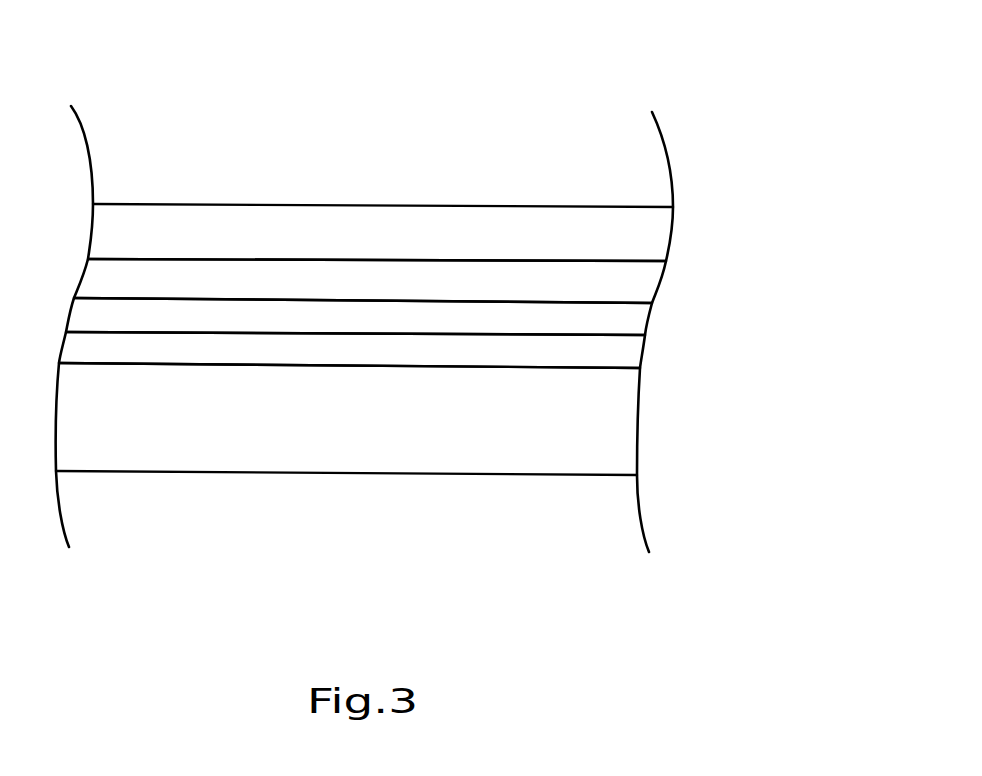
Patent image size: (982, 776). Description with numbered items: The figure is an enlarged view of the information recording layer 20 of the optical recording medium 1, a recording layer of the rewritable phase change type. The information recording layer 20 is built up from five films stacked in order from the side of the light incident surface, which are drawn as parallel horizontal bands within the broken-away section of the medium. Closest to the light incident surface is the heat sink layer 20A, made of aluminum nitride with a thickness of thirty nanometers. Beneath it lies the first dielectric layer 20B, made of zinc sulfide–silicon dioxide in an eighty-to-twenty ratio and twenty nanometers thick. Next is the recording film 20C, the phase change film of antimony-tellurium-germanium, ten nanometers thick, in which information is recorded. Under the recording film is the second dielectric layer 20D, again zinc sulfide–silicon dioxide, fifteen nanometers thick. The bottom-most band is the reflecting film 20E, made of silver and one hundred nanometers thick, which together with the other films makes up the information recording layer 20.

The optical recording medium 1 is at (574, 112).
The information recording layer 20 is at (813, 217).
The heat sink layer 20A is at (613, 235).
The first dielectric layer 20B is at (618, 288).
The recording film 20C is at (620, 320).
The second dielectric layer 20D is at (620, 352).
The reflecting film 20E is at (612, 422).